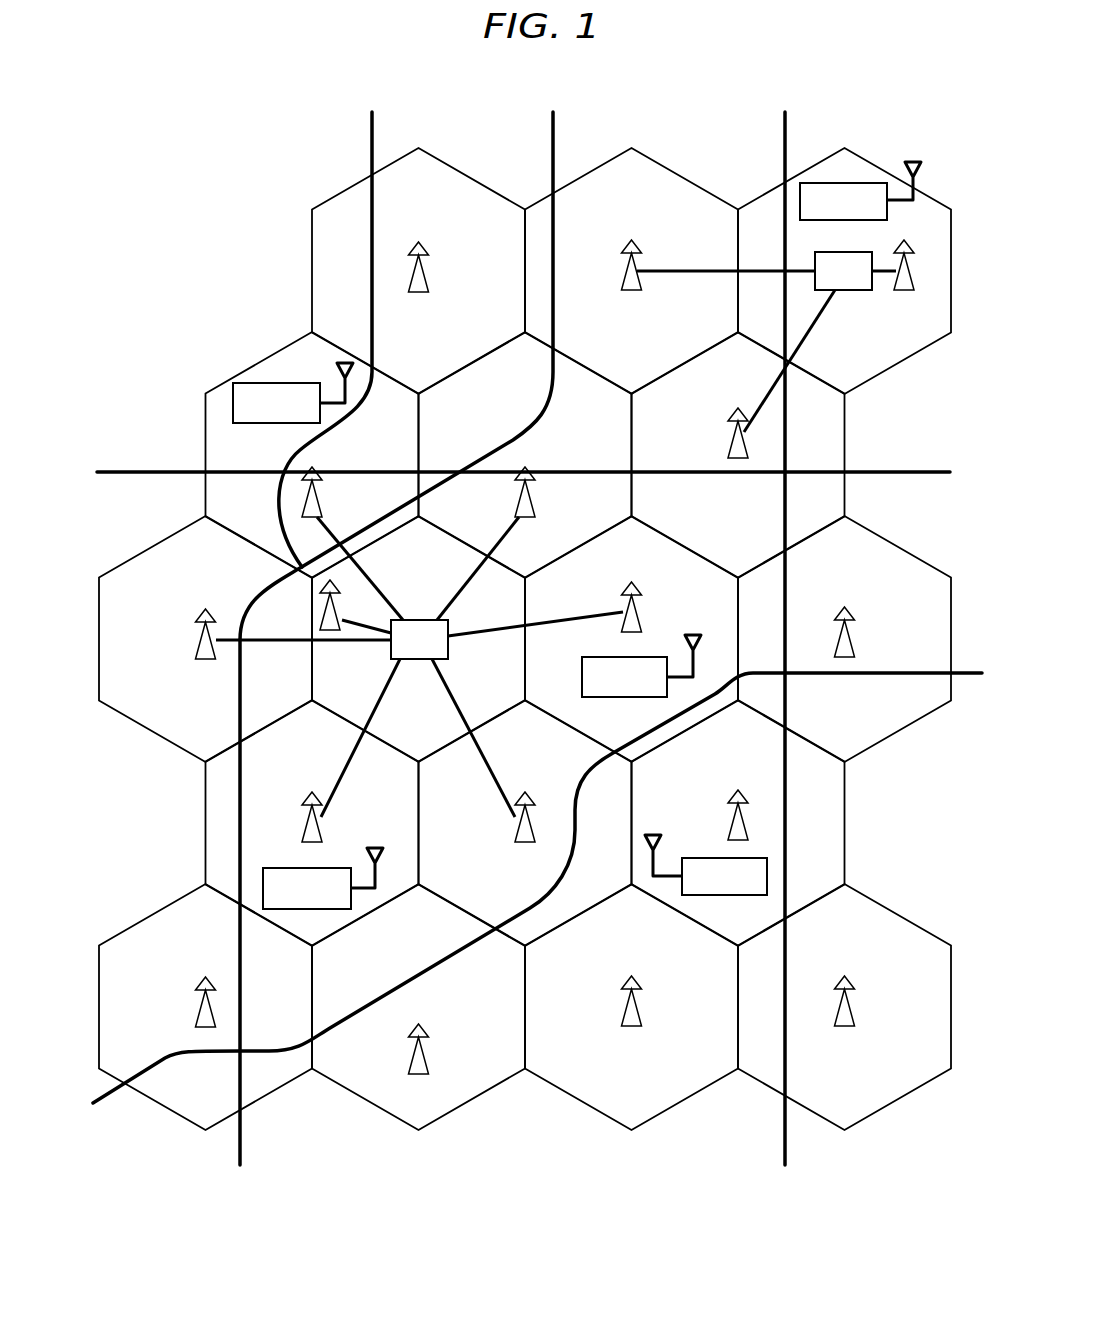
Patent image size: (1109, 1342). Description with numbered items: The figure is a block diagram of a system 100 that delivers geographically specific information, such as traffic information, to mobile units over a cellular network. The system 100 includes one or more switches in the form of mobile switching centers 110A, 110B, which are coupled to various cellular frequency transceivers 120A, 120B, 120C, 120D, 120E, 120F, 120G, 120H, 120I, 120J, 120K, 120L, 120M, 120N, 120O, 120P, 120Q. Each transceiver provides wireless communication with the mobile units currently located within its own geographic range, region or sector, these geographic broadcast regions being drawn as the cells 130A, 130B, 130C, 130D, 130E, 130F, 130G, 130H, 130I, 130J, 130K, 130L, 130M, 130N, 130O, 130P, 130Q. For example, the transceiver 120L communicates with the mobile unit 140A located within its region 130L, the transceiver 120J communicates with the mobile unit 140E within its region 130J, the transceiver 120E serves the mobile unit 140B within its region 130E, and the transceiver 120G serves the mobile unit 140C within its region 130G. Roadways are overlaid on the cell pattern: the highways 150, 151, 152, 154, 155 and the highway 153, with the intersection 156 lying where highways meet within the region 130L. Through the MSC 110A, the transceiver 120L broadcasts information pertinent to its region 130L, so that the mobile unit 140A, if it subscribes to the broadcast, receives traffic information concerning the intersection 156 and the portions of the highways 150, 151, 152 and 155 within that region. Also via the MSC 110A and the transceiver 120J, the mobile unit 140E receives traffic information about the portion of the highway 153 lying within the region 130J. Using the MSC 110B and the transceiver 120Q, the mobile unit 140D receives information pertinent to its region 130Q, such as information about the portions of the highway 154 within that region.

The system 100 is at (547, 1148).
The mobile switching center (MSC) 110A is at (414, 660).
The mobile switching center (MSC) 110B is at (815, 262).
The mobile transceiver 120A is at (197, 1014).
The mobile transceiver 120B is at (430, 1064).
The mobile transceiver 120C is at (643, 1013).
The mobile transceiver 120D is at (856, 1013).
The mobile transceiver 120E is at (325, 830).
The mobile transceiver 120F is at (515, 832).
The mobile transceiver 120G is at (746, 827).
The mobile transceiver 120H is at (208, 661).
The mobile transceiver 120I is at (321, 617).
The mobile transceiver 120J is at (641, 620).
The mobile transceiver 120K is at (854, 643).
The mobile transceiver 120L is at (325, 500).
The mobile transceiver 120M is at (536, 500).
The mobile transceiver 120N is at (728, 447).
The mobile transceiver 120O is at (429, 280).
The mobile transceiver 120P is at (621, 279).
The mobile transceiver 120Q is at (904, 292).
The geographic broadcast region 130A is at (227, 935).
The geographic broadcast region 130B is at (441, 935).
The geographic broadcast region 130C is at (651, 935).
The geographic broadcast region 130D is at (866, 935).
The geographic broadcast region 130E is at (335, 755).
The geographic broadcast region 130F is at (545, 755).
The geographic broadcast region 130G is at (759, 752).
The geographic broadcast region 130H is at (226, 575).
The geographic broadcast region 130I is at (441, 575).
The geographic broadcast region 130J is at (653, 575).
The geographic broadcast region 130K is at (866, 575).
The geographic broadcast region 130L is at (403, 461).
The geographic broadcast region 130M is at (543, 384).
The geographic broadcast region 130N is at (758, 380).
The geographic broadcast region 130O is at (438, 199).
The geographic broadcast region 130P is at (651, 199).
The geographic broadcast region 130Q is at (868, 375).
The mobile unit 140A is at (233, 402).
The mobile unit 140B is at (280, 868).
The mobile unit 140C is at (700, 858).
The mobile unit 140D is at (870, 183).
The mobile unit 140E is at (582, 675).
The highway 150 is at (371, 149).
The highway 151 is at (552, 149).
The highway 152 is at (239, 846).
The highway 153 is at (964, 673).
The highway 154 is at (784, 147).
The highway 155 is at (160, 471).
The intersection 156 is at (292, 562).